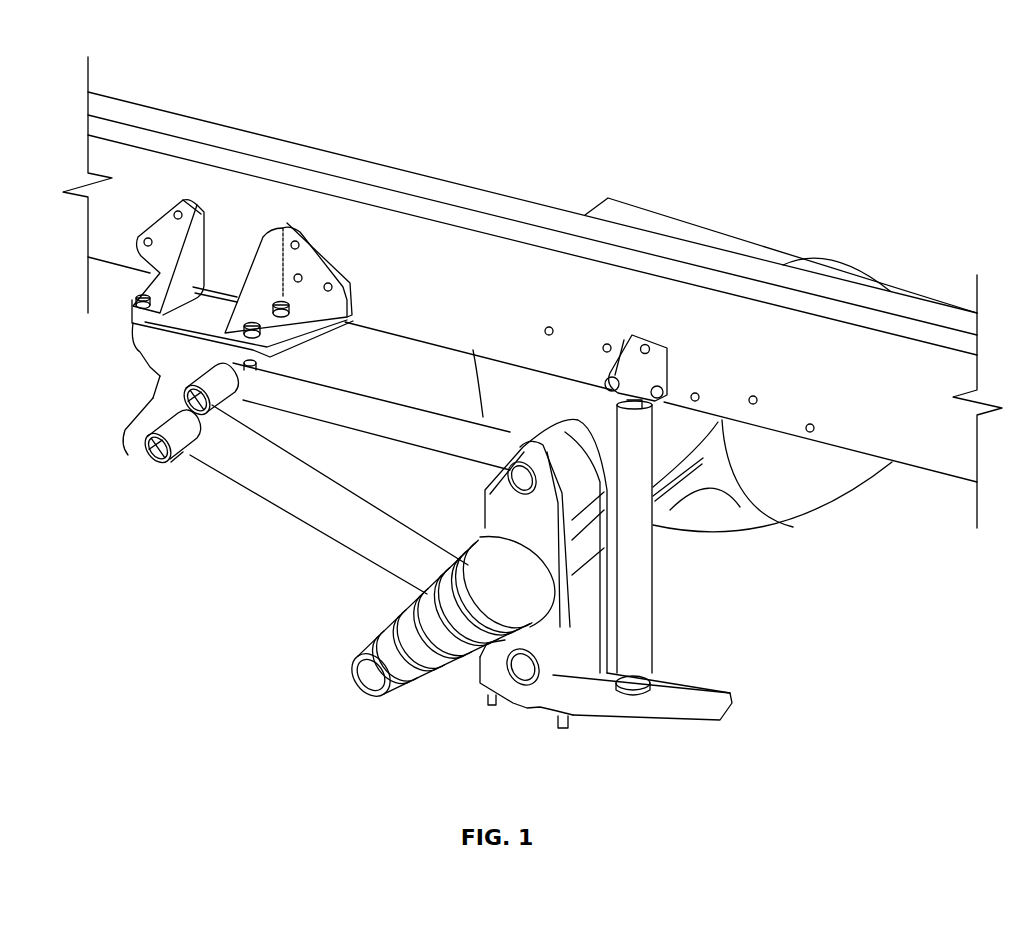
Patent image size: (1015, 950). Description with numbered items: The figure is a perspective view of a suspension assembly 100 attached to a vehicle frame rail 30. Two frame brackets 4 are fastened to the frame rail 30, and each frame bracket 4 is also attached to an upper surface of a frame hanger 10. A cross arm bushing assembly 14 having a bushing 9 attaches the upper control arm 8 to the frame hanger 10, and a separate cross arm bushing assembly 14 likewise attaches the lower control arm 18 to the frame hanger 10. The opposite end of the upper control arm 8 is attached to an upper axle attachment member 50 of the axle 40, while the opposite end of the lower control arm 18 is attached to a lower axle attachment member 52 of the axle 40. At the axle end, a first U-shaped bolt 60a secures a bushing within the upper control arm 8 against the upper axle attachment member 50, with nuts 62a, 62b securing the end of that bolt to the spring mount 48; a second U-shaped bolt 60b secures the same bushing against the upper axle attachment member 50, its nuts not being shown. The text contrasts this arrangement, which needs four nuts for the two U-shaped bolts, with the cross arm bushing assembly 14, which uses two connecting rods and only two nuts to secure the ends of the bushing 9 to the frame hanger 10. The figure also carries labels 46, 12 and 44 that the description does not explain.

The suspension assembly 100 is at (832, 130).
The frame bracket 4 is at (197, 203).
The vehicle frame rail 30 is at (887, 357).
The upper shock bracket 46 is at (688, 350).
The frame hanger 10 is at (148, 353).
The bushing bores 12 is at (210, 402).
The bushing 9 is at (182, 458).
The cross arm bushing assembly 14 is at (142, 470).
The upper control arm 8 is at (430, 450).
The lower control arm 18 is at (320, 533).
The upper axle attachment member 50 is at (512, 502).
The second U-shaped bolt 60b is at (477, 383).
The first U-shaped bolt 60a is at (567, 605).
The lower axle attachment member 52 is at (535, 628).
The spring mount 48 is at (700, 687).
The nut 62b is at (492, 705).
The nut 62a is at (563, 728).
The shock absorber 44 is at (640, 590).
The axle 40 is at (667, 505).